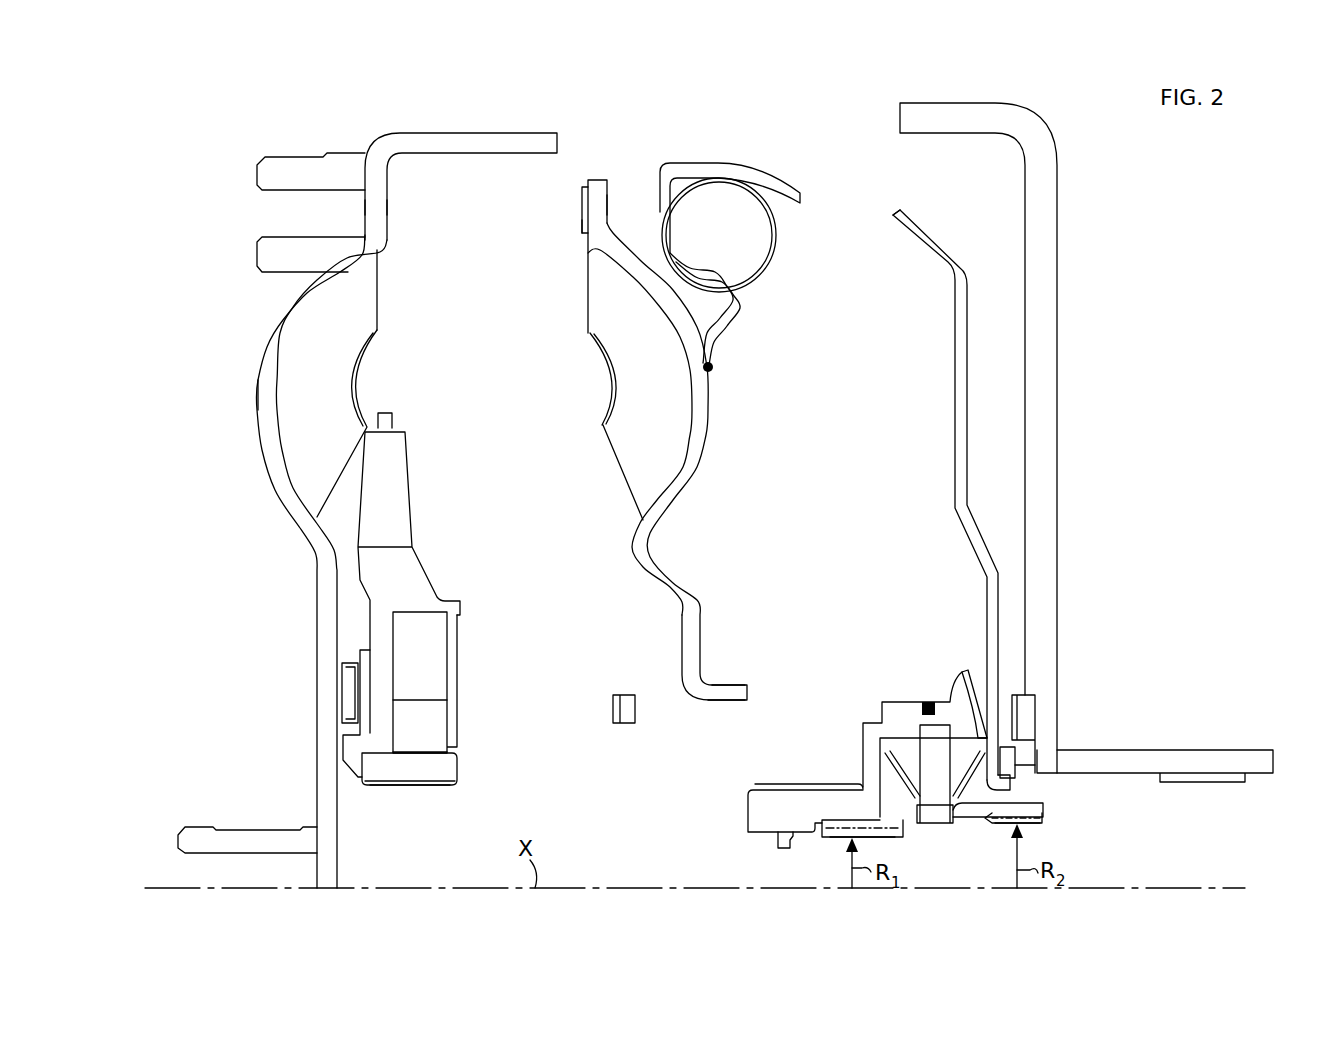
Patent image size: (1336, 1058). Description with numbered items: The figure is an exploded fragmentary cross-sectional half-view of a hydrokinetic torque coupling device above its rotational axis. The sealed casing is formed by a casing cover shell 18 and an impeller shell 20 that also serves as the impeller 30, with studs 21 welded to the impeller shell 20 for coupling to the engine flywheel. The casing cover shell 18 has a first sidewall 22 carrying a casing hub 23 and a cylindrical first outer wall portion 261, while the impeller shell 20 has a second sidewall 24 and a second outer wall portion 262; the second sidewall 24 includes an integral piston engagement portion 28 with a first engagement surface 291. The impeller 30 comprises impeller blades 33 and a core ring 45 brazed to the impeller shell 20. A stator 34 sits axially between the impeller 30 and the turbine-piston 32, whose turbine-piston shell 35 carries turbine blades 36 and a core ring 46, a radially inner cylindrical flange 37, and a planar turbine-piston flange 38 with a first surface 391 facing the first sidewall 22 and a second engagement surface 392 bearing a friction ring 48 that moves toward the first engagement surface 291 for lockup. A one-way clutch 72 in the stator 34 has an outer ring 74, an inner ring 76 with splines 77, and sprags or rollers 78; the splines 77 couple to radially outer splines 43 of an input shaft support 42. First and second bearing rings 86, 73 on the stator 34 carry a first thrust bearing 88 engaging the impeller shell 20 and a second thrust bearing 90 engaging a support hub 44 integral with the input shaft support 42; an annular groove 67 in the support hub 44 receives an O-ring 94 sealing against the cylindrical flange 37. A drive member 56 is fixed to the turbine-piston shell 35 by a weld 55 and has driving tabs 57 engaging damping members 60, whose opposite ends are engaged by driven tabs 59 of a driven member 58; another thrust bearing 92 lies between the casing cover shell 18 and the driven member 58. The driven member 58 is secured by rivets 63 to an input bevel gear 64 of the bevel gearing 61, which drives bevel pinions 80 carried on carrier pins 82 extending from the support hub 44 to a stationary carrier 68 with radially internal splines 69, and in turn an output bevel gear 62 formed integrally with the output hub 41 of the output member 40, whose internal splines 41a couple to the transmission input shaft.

The casing cover shell 18 is at (980, 494).
The impeller shell 20 is at (367, 488).
The studs 21 is at (298, 163).
The first sidewall 22 is at (1045, 310).
The casing hub 23 is at (1240, 755).
The second sidewall 24 is at (283, 327).
The first outer wall portion 261 is at (948, 136).
The second outer wall portion 262 is at (520, 133).
The piston engagement portion 28 is at (368, 207).
The first engagement surface 291 is at (388, 205).
The impeller 30 is at (246, 393).
The turbine-piston 32 is at (678, 497).
The impeller blades 33 is at (338, 327).
The stator 34 is at (430, 510).
The turbine-piston shell 35 is at (700, 437).
The turbine blades 36 is at (654, 380).
The cylindrical flange 37 is at (722, 688).
The turbine-piston flange 38 is at (597, 180).
The first surface 391 is at (607, 210).
The second engagement surface 392 is at (582, 195).
The output member 40 is at (907, 832).
The output hub 41 is at (845, 825).
The internal splines 41a is at (838, 840).
The input shaft support 42 is at (760, 810).
The radially outer splines 43 is at (780, 786).
The support hub 44 is at (897, 700).
The core ring 45 is at (370, 378).
The core ring 46 is at (607, 385).
The friction ring 48 is at (582, 228).
The weld 55 is at (716, 366).
The drive member 56 is at (732, 302).
The driving tabs 57 is at (737, 203).
The driven member 58 is at (958, 427).
The driven tabs 59 is at (916, 237).
The damping members 60 is at (778, 258).
The bevel gearing 61 is at (990, 688).
The output bevel gear 62 is at (892, 780).
The rivets 63 is at (1015, 765).
The input bevel gear 64 is at (990, 787).
The annular groove 67 is at (958, 668).
The carrier 68 is at (1042, 810).
The radially internal splines 69 is at (1040, 825).
The one-way clutch 72 is at (380, 628).
The second bearing ring 73 is at (455, 672).
The outer ring 74 is at (420, 671).
The inner ring 76 is at (450, 768).
The splines 77 is at (408, 787).
The sprags or rollers 78 is at (420, 733).
The bevel pinions 80 is at (1018, 740).
The carrier pins 82 is at (938, 795).
The first bearing ring 86 is at (360, 657).
The first thrust bearing 88 is at (350, 700).
The second thrust bearing 90 is at (613, 710).
The thrust bearing 92 is at (1030, 707).
The O-ring 94 is at (928, 702).